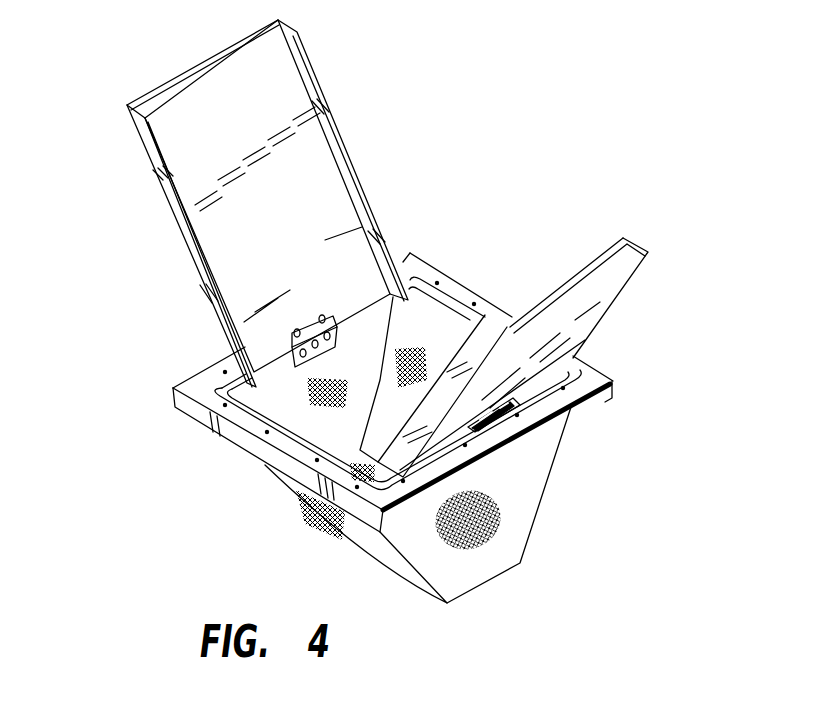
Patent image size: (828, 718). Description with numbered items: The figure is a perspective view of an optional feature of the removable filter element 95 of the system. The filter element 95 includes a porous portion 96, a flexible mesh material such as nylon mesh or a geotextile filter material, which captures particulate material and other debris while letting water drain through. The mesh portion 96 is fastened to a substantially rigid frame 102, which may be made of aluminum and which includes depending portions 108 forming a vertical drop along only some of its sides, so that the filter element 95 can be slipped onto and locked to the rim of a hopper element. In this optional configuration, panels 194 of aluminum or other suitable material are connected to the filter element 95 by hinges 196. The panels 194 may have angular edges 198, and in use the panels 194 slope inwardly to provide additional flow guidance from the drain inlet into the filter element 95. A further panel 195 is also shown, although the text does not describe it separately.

The filter element 95 is at (199, 465).
The porous portion 96 is at (512, 553).
The rigid frame 102 is at (582, 392).
The depending portion 108 is at (365, 513).
The panel 194 is at (285, 93).
The second deflector panel 195 is at (598, 300).
The hinge 196 is at (337, 325).
The angular edge 198 is at (348, 145).